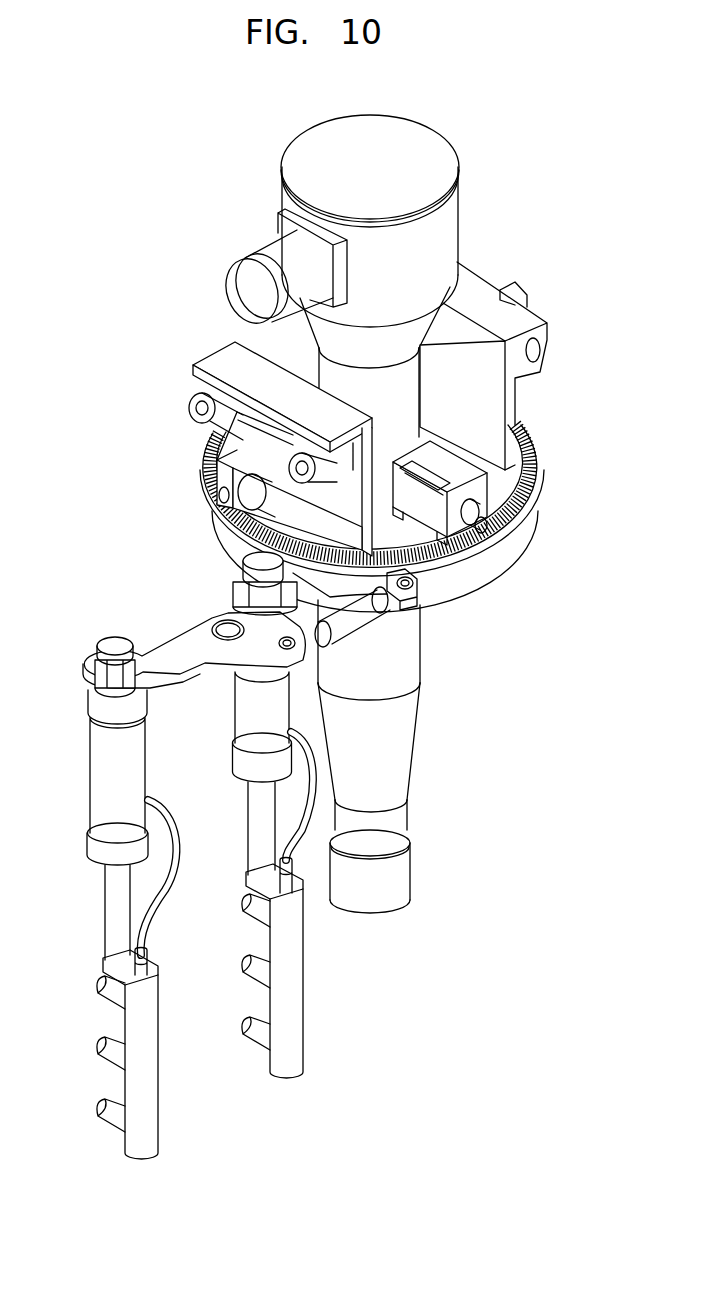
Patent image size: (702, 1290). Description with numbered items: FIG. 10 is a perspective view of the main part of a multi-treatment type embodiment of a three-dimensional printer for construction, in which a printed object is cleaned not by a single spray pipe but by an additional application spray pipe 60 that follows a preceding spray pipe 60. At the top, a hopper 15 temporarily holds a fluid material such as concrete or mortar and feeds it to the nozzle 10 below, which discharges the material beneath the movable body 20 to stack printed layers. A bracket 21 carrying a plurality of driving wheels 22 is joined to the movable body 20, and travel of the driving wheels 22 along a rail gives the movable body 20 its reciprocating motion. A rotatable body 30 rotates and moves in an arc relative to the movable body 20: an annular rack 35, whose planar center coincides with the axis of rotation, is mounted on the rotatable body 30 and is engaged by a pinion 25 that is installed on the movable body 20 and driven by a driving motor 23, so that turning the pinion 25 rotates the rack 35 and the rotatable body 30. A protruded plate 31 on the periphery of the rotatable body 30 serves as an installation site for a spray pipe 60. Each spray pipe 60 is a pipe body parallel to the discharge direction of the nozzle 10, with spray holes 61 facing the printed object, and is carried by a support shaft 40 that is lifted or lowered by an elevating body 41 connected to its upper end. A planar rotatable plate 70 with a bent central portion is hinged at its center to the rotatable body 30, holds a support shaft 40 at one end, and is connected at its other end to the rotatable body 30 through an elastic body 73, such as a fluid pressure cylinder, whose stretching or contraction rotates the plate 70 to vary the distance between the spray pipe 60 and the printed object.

The nozzle 10 is at (403, 770).
The hopper 15 is at (445, 236).
The movable body 20 is at (470, 610).
The bracket 21 is at (222, 348).
The driving wheels 22 is at (189, 416).
The driving motor 23 is at (480, 510).
The pinion 25 is at (484, 530).
The rotatable body 30 is at (478, 580).
The protruded plate 31 is at (235, 598).
The annular rack 35 is at (525, 462).
The support shaft 40 is at (248, 833).
The elevating body 41 is at (234, 715).
The spray pipe 60 is at (300, 992).
The spray holes 61 is at (245, 988).
The rotatable plate 70 is at (166, 642).
The elastic body 73 is at (365, 630).